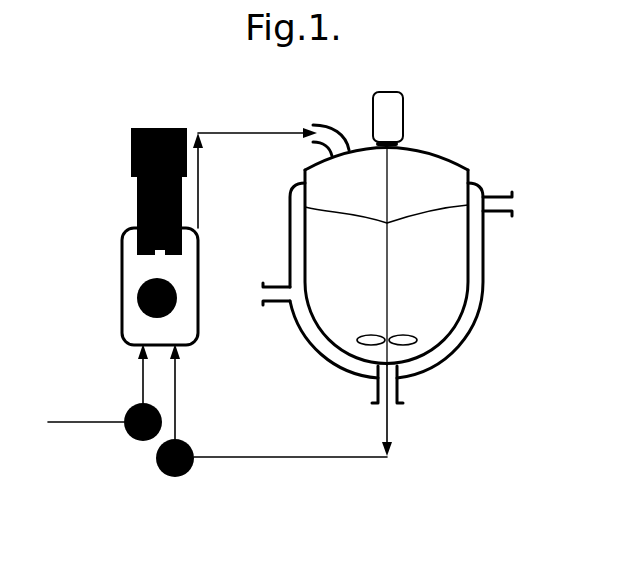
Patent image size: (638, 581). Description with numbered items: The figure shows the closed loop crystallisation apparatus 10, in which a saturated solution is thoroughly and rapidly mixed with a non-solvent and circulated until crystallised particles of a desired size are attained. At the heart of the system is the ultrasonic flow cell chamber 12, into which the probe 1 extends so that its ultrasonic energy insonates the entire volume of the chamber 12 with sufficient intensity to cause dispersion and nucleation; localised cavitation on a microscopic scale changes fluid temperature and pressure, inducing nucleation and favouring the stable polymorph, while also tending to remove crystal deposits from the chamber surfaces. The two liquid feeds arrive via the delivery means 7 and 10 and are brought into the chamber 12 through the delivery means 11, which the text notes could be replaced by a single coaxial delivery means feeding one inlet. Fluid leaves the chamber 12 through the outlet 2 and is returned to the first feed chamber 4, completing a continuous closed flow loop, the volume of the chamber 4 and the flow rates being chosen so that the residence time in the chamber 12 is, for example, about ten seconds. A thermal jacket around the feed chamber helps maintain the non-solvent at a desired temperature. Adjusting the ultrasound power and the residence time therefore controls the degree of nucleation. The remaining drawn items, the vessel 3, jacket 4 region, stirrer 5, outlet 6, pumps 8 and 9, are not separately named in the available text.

The probe 1 is at (136, 197).
The outlet 2 is at (248, 133).
The reactor vessel 3 is at (475, 240).
The first feed chamber 4 is at (487, 282).
The stirrer 5 is at (388, 313).
The outlet 6 is at (398, 393).
The delivery means 7 is at (292, 457).
The pump 8 is at (177, 478).
The pump 9 is at (136, 440).
The closed loop crystallisation apparatus 10 is at (92, 108).
The delivery means 11 is at (175, 380).
The ultrasonic flow cell chamber 12 is at (121, 282).